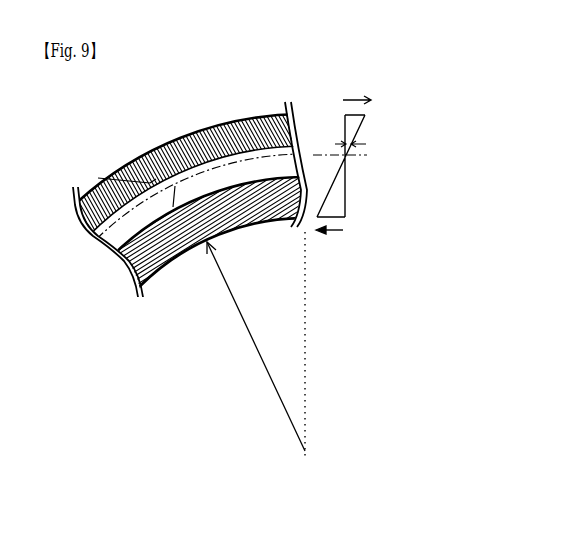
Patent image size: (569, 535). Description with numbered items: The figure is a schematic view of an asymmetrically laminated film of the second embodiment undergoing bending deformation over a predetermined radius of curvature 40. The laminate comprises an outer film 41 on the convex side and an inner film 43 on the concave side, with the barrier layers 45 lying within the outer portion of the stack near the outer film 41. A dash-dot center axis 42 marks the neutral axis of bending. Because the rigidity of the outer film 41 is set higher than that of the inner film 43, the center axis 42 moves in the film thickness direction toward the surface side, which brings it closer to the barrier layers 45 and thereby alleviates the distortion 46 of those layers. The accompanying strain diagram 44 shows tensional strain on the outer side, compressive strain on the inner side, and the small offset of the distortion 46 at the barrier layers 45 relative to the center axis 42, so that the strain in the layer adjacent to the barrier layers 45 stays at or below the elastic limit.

The radius of curvature 40 is at (256, 345).
The outer film 41 is at (223, 114).
The center axis 42 is at (98, 178).
The inner film 43 is at (243, 208).
The strain distribution diagram 44 is at (412, 157).
The barrier layers 45 is at (163, 145).
The distortion 46 is at (362, 146).